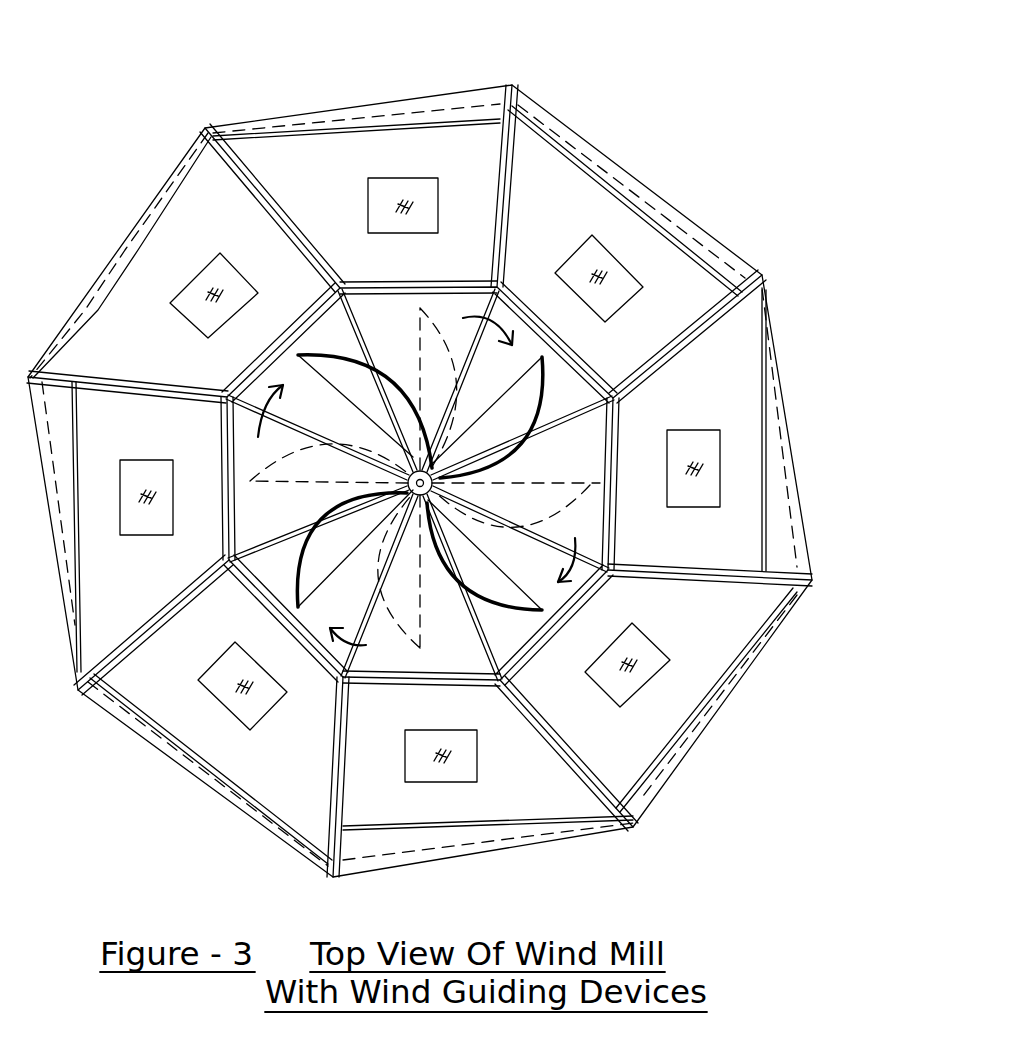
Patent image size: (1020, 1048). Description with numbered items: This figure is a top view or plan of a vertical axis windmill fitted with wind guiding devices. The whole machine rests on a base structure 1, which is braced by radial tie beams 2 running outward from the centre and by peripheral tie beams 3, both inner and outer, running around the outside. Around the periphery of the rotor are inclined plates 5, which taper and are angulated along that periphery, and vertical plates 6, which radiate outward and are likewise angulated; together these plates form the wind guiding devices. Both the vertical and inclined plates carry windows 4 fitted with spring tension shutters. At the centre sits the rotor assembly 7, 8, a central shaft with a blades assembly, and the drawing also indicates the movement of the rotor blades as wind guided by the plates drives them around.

The base structure 1 is at (692, 757).
The radial tie beams 2 is at (607, 575).
The peripheral tie beams 3 is at (313, 647).
The windows 4 is at (618, 260).
The inclined plates 5 is at (465, 167).
The vertical plates 6 is at (685, 337).
The rotor assembly 7 is at (313, 647).
The rotor assembly 8 is at (211, 769).